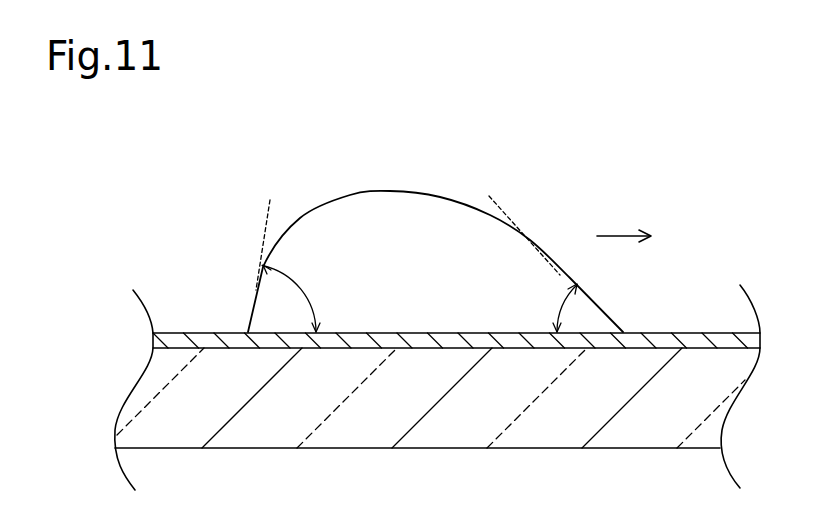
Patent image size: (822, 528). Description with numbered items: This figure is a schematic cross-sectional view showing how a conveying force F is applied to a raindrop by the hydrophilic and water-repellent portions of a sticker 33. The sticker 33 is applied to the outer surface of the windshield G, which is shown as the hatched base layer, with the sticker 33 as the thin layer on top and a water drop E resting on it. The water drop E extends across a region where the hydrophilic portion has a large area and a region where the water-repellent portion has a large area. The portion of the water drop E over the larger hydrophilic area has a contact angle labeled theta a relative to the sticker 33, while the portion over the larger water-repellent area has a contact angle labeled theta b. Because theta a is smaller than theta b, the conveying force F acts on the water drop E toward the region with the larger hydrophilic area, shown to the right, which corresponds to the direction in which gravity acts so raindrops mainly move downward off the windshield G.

The water drop E is at (385, 205).
The conveying force F is at (615, 238).
The sticker 33 is at (427, 338).
The windshield G is at (442, 430).